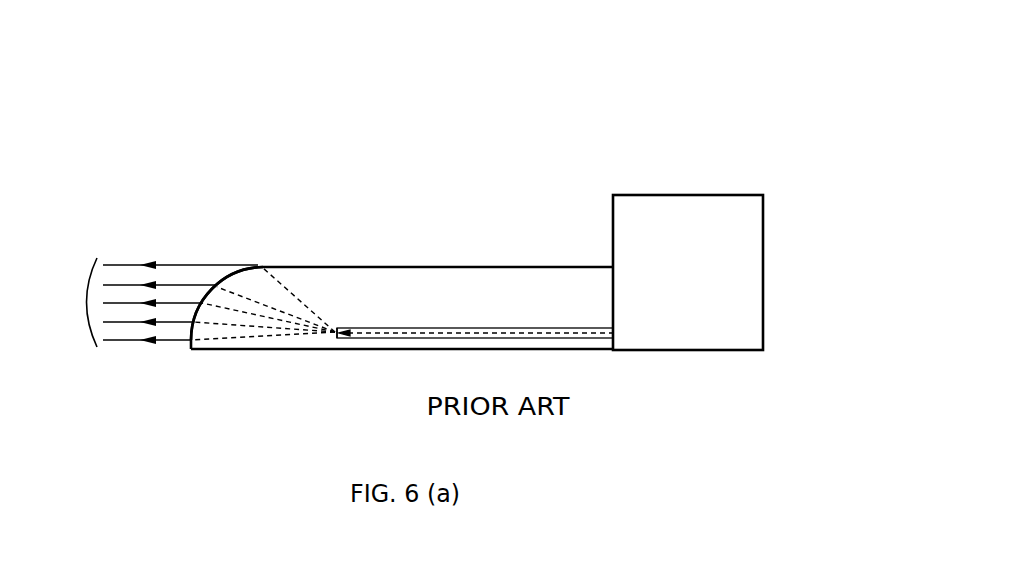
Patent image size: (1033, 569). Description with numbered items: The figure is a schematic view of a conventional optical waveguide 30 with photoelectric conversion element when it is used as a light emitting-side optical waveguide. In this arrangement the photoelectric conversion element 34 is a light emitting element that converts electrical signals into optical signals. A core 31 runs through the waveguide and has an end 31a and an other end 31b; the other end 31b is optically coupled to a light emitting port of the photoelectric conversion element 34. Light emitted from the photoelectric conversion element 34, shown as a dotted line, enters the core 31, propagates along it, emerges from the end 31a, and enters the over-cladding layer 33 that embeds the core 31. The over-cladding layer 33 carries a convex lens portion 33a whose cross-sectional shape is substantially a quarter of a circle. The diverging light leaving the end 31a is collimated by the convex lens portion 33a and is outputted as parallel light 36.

The optical waveguide with photoelectric conversion element 30 is at (645, 78).
The core 31 is at (522, 328).
The end of core 31a is at (335, 335).
The other end of core 31b is at (614, 336).
The over-cladding layer 33 is at (400, 309).
The convex lens portion 33a is at (227, 273).
The photoelectric conversion element 34 is at (737, 260).
The parallel light 36 is at (156, 302).